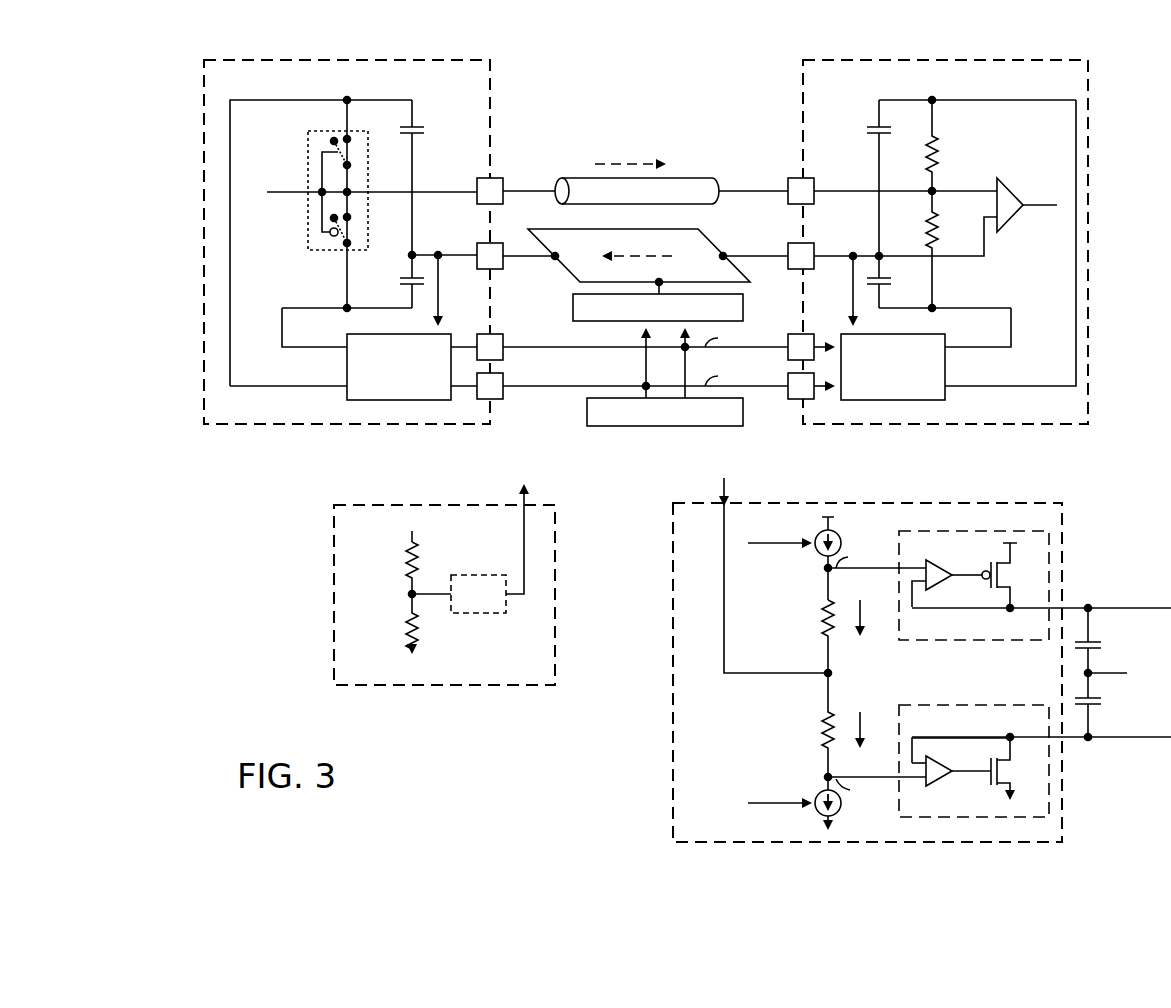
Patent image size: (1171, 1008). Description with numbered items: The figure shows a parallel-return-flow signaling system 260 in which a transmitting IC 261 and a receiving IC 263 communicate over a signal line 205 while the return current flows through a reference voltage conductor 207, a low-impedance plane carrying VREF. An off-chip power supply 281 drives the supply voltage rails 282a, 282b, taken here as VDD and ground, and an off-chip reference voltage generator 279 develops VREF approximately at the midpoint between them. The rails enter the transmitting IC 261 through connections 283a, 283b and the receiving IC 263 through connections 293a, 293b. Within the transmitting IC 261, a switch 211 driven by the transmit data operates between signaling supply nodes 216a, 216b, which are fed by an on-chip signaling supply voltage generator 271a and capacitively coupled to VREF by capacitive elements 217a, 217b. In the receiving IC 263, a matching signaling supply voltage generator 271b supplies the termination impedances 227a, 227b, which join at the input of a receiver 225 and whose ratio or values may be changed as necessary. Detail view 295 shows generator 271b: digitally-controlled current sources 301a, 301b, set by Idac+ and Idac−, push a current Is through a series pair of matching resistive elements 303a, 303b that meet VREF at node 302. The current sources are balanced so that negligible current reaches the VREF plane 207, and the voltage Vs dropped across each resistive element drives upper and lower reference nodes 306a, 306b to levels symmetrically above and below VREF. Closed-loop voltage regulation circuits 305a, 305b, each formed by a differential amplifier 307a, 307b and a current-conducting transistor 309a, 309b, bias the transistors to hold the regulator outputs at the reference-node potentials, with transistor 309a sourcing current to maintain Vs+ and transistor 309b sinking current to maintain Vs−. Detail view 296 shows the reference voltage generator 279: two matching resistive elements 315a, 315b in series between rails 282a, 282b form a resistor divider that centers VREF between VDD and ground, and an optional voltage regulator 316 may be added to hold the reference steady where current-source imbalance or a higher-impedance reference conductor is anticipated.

The parallel-return-flow signaling system 260 is at (252, 466).
The transmitting IC 261 is at (496, 248).
The receiving IC 263 is at (922, 248).
The transmit switch 211 is at (322, 131).
The first supply node 216a is at (336, 100).
The second supply node 216b is at (336, 308).
The capacitive element 217a is at (416, 138).
The capacitive element 217b is at (398, 280).
The signaling supply voltage generator 271a is at (399, 367).
The signaling supply voltage generator 271b is at (893, 367).
The supply voltage rail 282a is at (516, 347).
The supply voltage rail 282b is at (516, 386).
The Tx IC supply pad 283a is at (502, 334).
The Tx IC ground pad 283b is at (502, 399).
The Rx IC supply pad 293a is at (792, 334).
The Rx IC ground pad 293b is at (800, 399).
The transmission line Z0 205 is at (706, 204).
The reference voltage conductor 207 is at (722, 246).
The reference voltage generator 279 is at (658, 302).
The power supply 281 is at (670, 378).
The receiver amplifier 225 is at (1004, 222).
The termination impedance 227a is at (945, 165).
The termination impedance 227b is at (945, 234).
The detail view 295 is at (862, 392).
The detail view 296 is at (590, 318).
The digitally-controlled current source 301a is at (816, 553).
The digitally-controlled current source 301b is at (816, 813).
The node 302 is at (832, 678).
The resistive element 303a is at (826, 637).
The resistive element 303b is at (826, 748).
The closed-loop voltage regulation circuit 305a is at (974, 585).
The closed-loop voltage regulation circuit 305b is at (974, 761).
The upper reference node 306a is at (828, 588).
The lower reference node 306b is at (830, 774).
The differential amplifier 307a is at (944, 568).
The differential amplifier 307b is at (940, 786).
The current-conducting transistor 309a is at (1018, 570).
The current-conducting transistor 309b is at (1019, 773).
The resistive element 315a is at (402, 568).
The resistive element 315b is at (402, 621).
The voltage regulator 316 is at (477, 614).